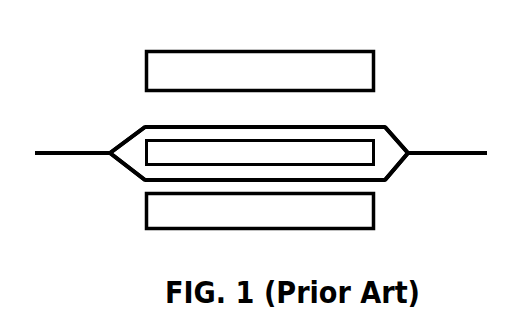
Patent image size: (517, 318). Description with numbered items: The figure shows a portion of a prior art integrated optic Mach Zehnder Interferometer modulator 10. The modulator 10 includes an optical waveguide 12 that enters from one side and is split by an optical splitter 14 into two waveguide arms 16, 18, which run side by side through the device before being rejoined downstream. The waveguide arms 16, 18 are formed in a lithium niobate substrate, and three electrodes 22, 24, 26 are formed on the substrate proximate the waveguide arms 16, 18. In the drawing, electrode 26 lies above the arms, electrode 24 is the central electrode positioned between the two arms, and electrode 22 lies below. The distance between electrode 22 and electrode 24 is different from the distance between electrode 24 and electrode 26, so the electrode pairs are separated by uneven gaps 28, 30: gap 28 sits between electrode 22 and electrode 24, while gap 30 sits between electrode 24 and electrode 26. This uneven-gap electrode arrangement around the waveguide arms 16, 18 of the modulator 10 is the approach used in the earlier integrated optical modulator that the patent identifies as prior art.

The modulator 10 is at (134, 101).
The optical waveguide 12 is at (57, 158).
The optical splitter 14 is at (108, 150).
The waveguide arm 16 is at (400, 137).
The waveguide arm 18 is at (402, 166).
The electrode 22 is at (335, 215).
The electrode 24 is at (323, 153).
The electrode 26 is at (273, 78).
The gap 28 is at (132, 193).
The gap 30 is at (391, 116).